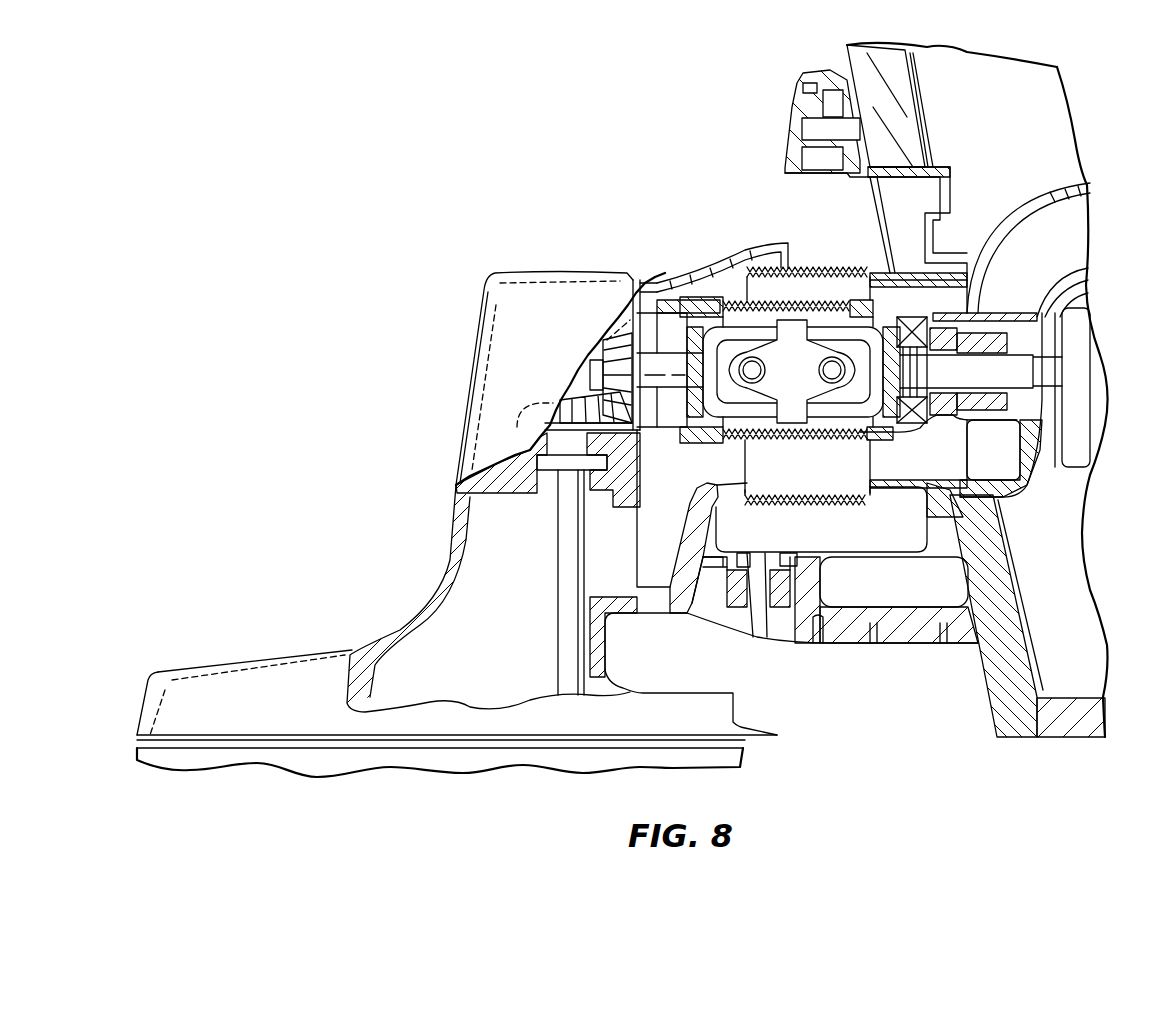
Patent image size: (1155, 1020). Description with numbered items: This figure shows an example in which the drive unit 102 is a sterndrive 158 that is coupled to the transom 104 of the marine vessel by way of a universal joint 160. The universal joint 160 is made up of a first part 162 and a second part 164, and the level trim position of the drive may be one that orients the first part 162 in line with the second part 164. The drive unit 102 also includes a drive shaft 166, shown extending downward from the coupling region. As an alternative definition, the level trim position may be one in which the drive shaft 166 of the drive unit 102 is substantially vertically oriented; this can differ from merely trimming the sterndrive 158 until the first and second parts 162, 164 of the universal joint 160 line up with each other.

The drive unit 102 is at (372, 392).
The transom 104 is at (980, 670).
The sterndrive 158 is at (475, 355).
The universal joint 160 is at (792, 322).
The first part of the universal joint 162 is at (735, 330).
The second part of the universal joint 164 is at (843, 330).
The drive shaft 166 is at (563, 570).